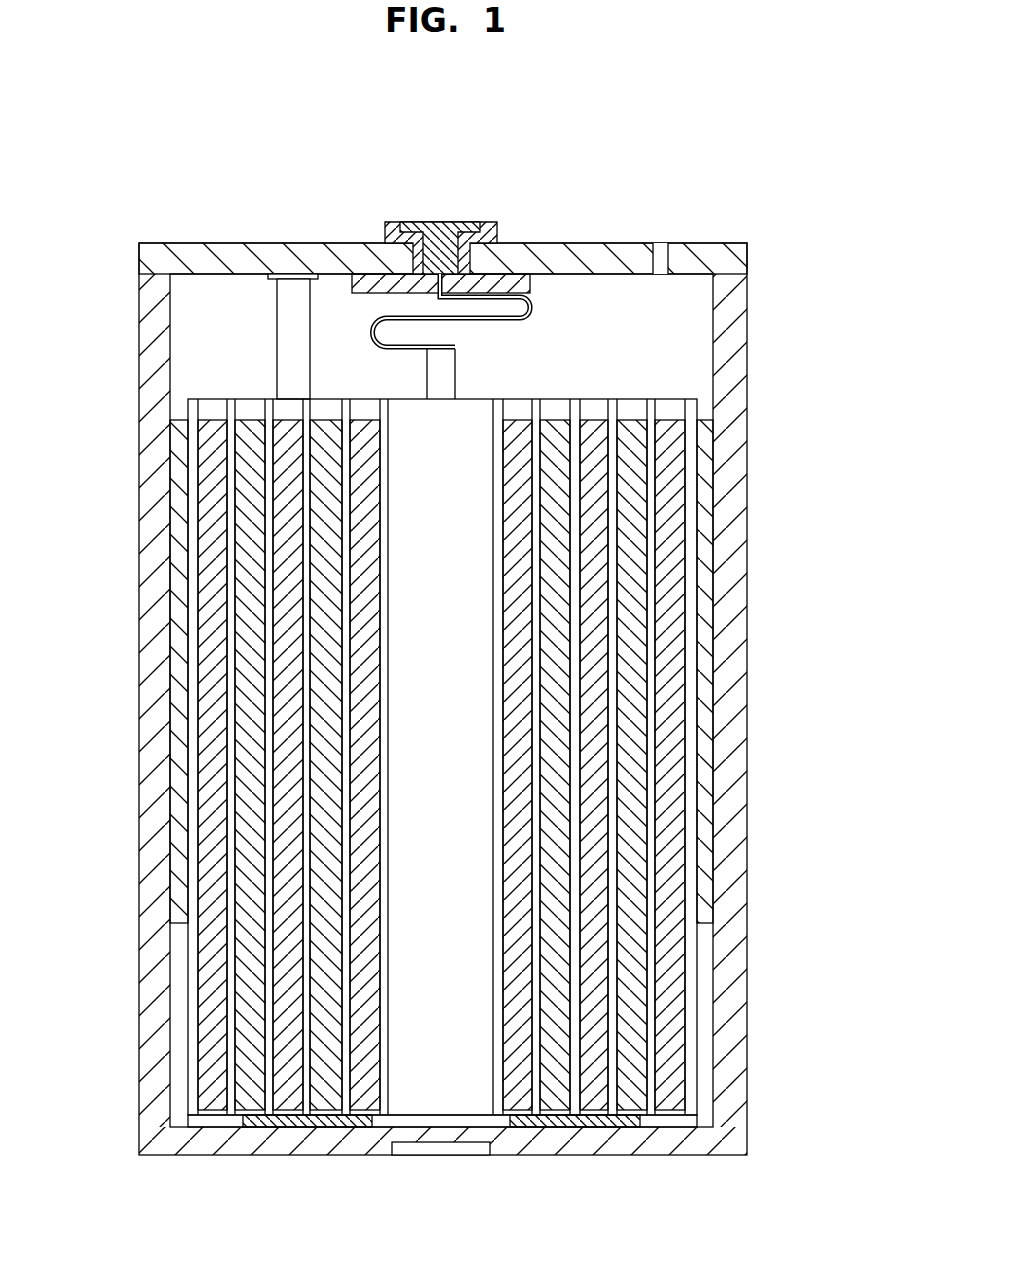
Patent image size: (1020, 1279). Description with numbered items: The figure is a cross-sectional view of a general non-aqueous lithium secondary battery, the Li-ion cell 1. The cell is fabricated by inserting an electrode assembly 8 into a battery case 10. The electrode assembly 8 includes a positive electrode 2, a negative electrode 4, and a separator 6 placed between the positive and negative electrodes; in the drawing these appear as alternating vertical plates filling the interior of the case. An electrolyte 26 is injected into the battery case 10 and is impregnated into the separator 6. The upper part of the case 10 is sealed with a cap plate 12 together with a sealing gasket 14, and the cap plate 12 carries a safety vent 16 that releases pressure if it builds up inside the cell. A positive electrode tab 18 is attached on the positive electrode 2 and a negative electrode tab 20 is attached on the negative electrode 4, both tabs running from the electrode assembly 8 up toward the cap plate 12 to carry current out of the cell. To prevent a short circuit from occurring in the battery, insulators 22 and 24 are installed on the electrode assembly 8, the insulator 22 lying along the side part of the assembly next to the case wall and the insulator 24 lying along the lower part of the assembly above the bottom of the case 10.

The Li-ion cell 1 is at (835, 391).
The positive electrode 2 is at (680, 982).
The negative electrode 4 is at (235, 933).
The separator 6 is at (230, 1055).
The electrode assembly 8 is at (619, 377).
The battery case 10 is at (150, 371).
The cap plate 12 is at (567, 250).
The sealing gasket 14 is at (393, 232).
The safety vent 16 is at (660, 255).
The positive electrode tab 18 is at (290, 290).
The negative electrode tab 20 is at (441, 257).
The insulator 22 is at (178, 663).
The insulator 24 is at (323, 1122).
The electrolyte 26 is at (655, 1049).